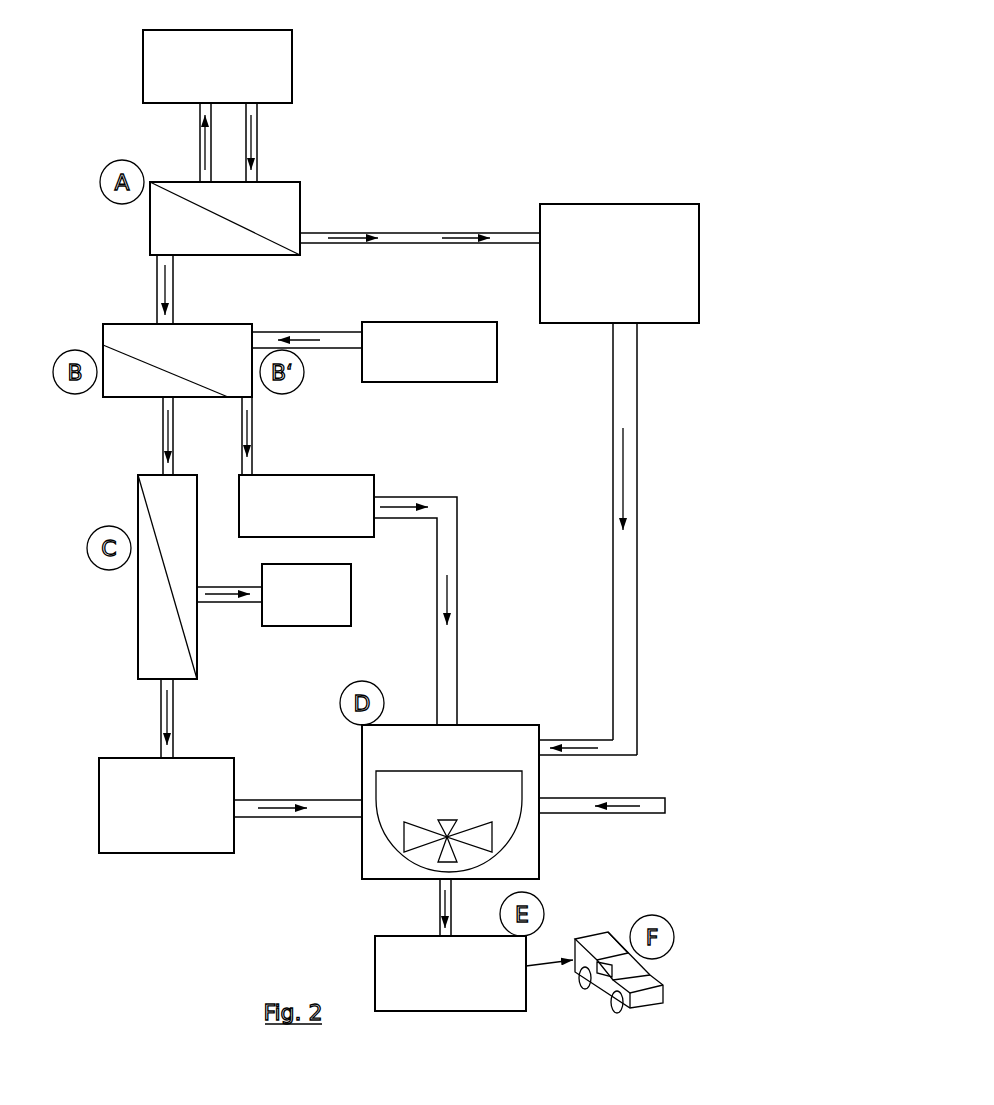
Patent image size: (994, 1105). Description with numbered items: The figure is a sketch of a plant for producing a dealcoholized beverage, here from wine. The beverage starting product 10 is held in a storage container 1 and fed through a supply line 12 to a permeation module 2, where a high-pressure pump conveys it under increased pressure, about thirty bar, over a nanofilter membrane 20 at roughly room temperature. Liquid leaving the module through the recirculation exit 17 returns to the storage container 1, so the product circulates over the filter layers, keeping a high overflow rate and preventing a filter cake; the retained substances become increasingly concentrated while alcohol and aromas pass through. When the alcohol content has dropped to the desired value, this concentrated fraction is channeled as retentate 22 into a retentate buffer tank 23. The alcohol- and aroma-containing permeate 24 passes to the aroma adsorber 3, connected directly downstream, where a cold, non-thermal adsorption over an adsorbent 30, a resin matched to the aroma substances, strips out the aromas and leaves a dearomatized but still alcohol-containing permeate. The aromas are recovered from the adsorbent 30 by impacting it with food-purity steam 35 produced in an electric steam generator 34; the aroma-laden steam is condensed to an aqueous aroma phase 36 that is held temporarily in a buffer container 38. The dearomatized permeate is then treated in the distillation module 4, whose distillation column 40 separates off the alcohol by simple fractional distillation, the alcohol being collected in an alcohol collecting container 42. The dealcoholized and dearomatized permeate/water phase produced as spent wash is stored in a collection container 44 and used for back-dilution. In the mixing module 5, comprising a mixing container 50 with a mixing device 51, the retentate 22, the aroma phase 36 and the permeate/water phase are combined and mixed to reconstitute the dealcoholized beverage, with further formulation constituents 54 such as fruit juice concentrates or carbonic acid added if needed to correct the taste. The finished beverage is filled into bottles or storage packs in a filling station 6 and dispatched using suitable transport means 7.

The storage container 1 is at (203, 79).
The permeation module 2 is at (312, 187).
The aroma adsorber 3 is at (103, 333).
The distillation module 4 is at (130, 497).
The mixing module 5 is at (490, 757).
The filling station 6 is at (439, 987).
The transport means 7 is at (617, 932).
The beverage starting product 10 is at (602, 110).
The supply line 12 is at (298, 112).
The recirculation exit 17 is at (152, 130).
The nanofilter membrane 20 is at (239, 222).
The retentate 22 is at (458, 238).
The retentate buffer tank 23 is at (610, 274).
The permeate 24 is at (160, 288).
The adsorbent 30 is at (180, 375).
The steam generator 34 is at (404, 364).
The steam 35 is at (310, 333).
The aroma phase 36 is at (247, 442).
The buffer container 38 is at (293, 517).
The distillation column 40 is at (178, 628).
The alcohol collecting container 42 is at (293, 607).
The collection container 44 is at (150, 822).
The mixing container 50 is at (385, 808).
The mixing device 51 is at (423, 837).
The further formulation constituents 54 is at (613, 803).